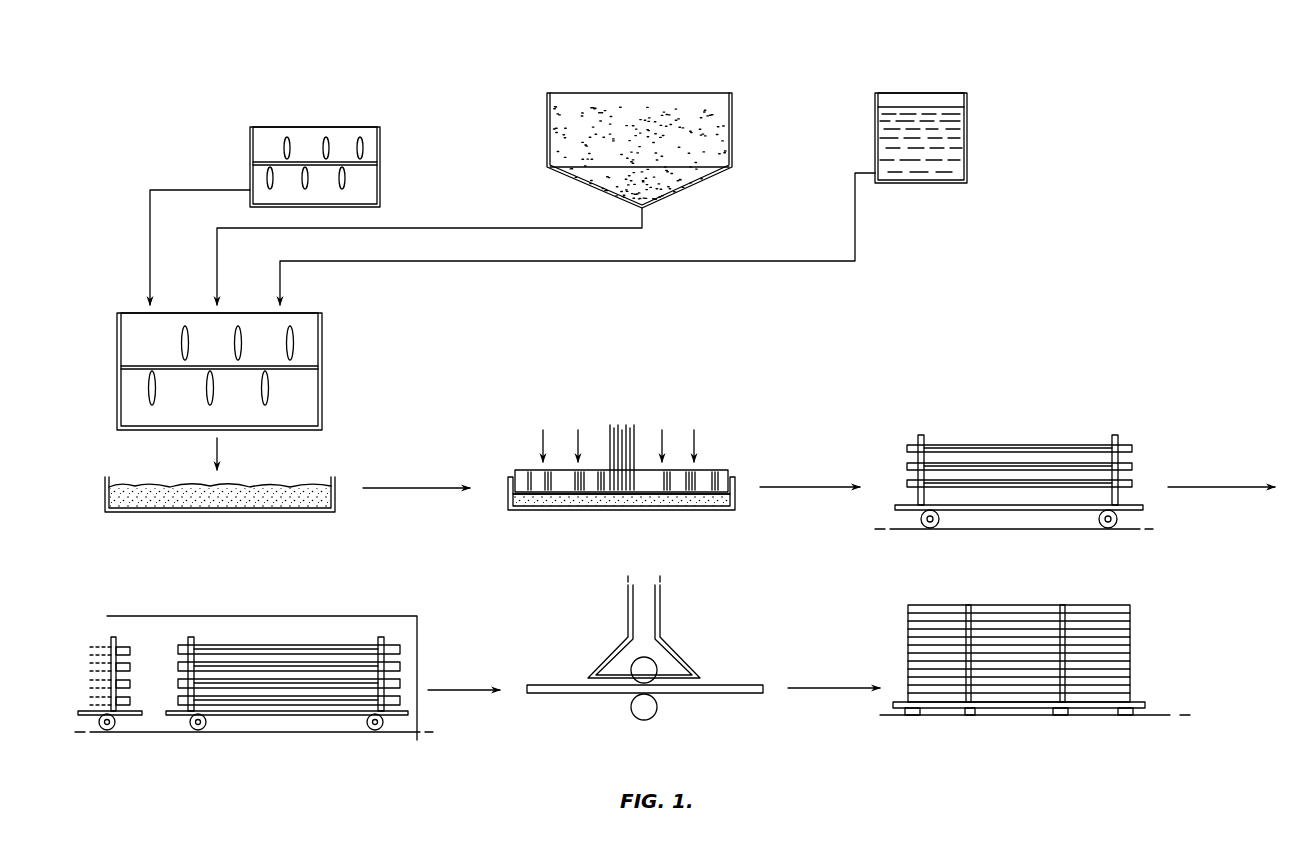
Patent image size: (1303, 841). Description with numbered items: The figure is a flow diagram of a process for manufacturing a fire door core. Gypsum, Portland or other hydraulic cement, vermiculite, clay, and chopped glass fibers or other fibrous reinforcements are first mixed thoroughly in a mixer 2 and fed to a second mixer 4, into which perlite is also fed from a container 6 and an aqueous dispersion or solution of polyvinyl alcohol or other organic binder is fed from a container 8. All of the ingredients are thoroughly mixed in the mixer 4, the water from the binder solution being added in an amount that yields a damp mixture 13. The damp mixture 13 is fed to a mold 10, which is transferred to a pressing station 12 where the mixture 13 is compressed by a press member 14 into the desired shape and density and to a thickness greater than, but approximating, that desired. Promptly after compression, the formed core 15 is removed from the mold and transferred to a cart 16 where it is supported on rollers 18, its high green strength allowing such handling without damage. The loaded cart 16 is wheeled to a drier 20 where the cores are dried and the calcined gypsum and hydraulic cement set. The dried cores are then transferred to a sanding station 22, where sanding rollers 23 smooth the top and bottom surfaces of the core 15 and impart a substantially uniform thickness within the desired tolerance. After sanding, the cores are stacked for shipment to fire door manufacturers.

The mixer 2 is at (381, 138).
The mixer 4 is at (323, 333).
The container 6 is at (735, 125).
The container 8 is at (968, 107).
The mold 10 is at (255, 478).
The pressing station 12 is at (667, 446).
The damp mixture 13 is at (303, 487).
The press member 14 is at (706, 470).
The formed core 15 is at (693, 505).
The cart 16 is at (1068, 510).
The rollers 18 is at (1027, 455).
The drier 20 is at (212, 610).
The sanding station 22 is at (678, 630).
The sanding rollers 23 is at (650, 670).